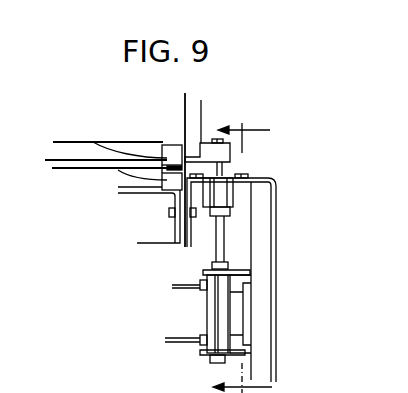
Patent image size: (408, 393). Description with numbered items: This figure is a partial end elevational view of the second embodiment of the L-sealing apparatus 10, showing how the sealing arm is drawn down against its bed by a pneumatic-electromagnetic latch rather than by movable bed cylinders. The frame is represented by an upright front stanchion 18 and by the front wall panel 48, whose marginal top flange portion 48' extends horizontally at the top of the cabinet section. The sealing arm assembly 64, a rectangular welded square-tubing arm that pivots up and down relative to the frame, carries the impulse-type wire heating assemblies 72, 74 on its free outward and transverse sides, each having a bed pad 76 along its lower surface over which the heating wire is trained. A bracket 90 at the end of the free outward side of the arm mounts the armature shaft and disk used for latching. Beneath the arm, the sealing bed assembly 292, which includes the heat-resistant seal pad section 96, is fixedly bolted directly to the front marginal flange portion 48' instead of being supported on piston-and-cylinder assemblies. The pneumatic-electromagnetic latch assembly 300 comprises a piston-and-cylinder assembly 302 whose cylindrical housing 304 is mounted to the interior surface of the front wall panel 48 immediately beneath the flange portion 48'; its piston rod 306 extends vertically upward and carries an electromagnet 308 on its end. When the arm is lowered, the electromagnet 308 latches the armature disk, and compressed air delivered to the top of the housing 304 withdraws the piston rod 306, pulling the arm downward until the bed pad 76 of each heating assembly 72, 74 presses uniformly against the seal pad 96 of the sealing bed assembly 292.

The L-sealing apparatus 10 is at (250, 132).
The front stanchion 18 is at (252, 302).
The front wall panel 48 is at (294, 280).
The front marginal top flange portion 48' is at (237, 195).
The sealing arm assembly 64 is at (185, 107).
The wire heating assembly 72 is at (172, 147).
The wire heating assembly 74 is at (78, 155).
The bed pad 76 is at (95, 143).
The bracket 90 is at (207, 142).
The seal pad section 96 is at (118, 172).
The sealing bed assembly 292 is at (152, 223).
The pneumatic-electromagnetic latch assembly 300 is at (157, 282).
The piston-and-cylinder assembly 302 is at (227, 330).
The cylindrical housing 304 is at (212, 307).
The piston rod 306 is at (215, 237).
The electromagnet 308 is at (227, 193).